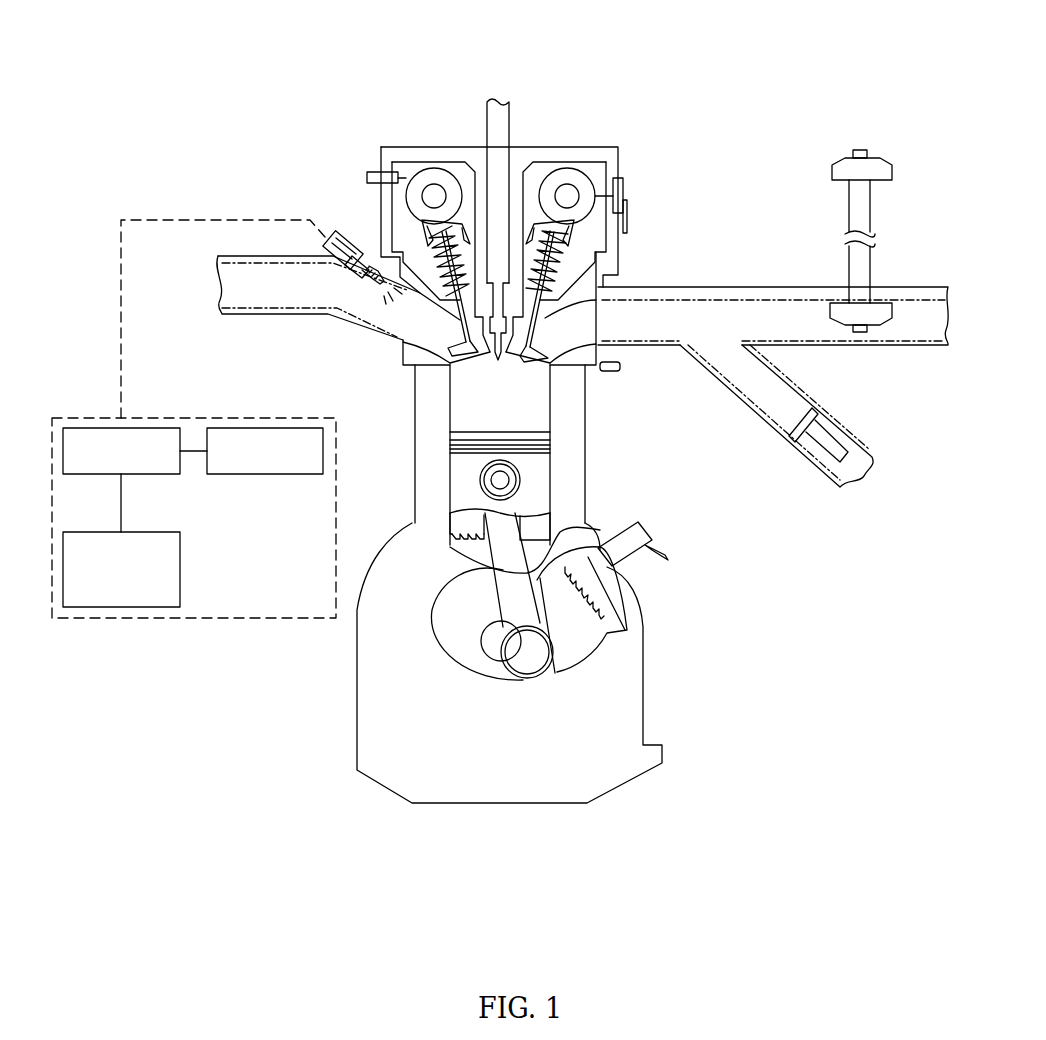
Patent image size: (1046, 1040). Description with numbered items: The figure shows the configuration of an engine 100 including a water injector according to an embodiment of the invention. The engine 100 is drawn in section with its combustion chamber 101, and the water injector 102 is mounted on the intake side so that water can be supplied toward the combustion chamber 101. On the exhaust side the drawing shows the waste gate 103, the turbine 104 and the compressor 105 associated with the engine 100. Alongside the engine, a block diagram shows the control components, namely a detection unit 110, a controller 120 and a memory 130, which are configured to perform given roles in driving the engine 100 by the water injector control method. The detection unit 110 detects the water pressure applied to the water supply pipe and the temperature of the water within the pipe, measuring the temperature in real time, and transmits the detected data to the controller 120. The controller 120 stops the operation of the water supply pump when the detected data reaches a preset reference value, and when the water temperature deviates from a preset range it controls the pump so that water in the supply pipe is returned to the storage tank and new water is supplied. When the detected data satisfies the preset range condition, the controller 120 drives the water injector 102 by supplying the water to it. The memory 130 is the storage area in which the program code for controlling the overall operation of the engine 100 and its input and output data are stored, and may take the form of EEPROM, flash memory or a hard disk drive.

The engine 100 is at (445, 112).
The combustion chamber 101 is at (462, 423).
The water injector 102 is at (356, 238).
The waste gate 103 is at (800, 437).
The turbine 104 is at (830, 304).
The compressor 105 is at (835, 172).
The detection unit 110 is at (121, 608).
The controller 120 is at (145, 427).
The memory 130 is at (275, 427).